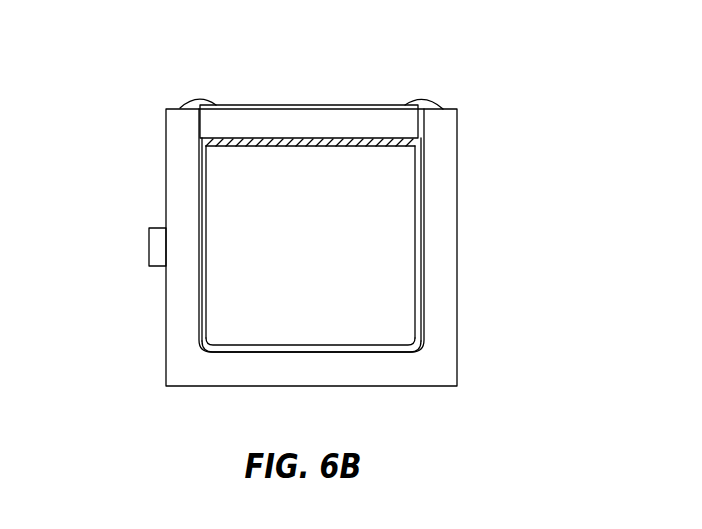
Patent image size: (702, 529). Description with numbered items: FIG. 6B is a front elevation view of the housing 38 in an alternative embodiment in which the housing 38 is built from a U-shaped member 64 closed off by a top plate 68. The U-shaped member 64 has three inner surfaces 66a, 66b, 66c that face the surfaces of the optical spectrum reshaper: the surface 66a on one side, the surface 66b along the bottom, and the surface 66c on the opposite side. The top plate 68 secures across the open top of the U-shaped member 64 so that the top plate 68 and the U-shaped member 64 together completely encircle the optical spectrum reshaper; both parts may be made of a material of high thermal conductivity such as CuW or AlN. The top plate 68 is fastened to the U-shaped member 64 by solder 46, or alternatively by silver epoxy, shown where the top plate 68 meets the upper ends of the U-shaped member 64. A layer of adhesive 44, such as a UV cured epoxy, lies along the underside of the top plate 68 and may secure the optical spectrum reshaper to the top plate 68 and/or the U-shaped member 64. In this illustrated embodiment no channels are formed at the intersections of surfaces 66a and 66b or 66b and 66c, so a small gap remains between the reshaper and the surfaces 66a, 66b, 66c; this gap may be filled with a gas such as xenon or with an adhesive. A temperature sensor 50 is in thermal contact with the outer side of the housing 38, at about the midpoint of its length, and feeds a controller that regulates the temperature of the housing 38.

The housing 38 is at (508, 121).
The adhesive 44 is at (297, 140).
The solder 46 is at (194, 103).
The temperature sensor 50 is at (158, 247).
The U-shaped member 64 is at (185, 364).
The surface 66a is at (198, 197).
The surface 66b is at (326, 353).
The surface 66c is at (422, 243).
The top plate 68 is at (263, 120).